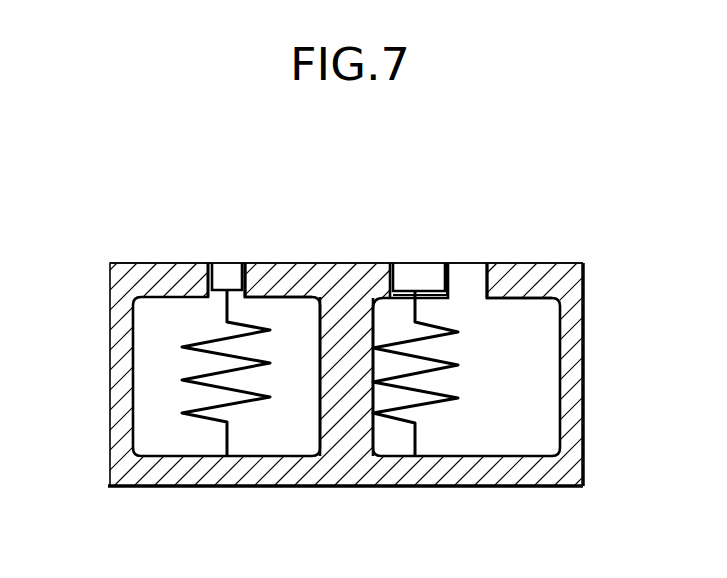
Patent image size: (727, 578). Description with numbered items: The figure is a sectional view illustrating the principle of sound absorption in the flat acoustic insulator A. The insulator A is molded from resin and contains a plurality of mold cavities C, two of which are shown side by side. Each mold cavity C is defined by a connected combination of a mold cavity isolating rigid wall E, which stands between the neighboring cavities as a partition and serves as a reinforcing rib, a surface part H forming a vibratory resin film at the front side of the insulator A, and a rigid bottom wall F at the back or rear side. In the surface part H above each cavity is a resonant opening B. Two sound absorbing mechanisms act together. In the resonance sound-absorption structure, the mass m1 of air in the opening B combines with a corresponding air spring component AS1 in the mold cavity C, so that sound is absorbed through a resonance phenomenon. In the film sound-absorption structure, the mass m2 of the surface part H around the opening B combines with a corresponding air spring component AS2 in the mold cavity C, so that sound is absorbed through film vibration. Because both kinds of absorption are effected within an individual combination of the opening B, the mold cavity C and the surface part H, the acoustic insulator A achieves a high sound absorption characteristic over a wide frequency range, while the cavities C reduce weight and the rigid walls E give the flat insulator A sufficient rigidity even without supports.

The acoustic insulator A is at (363, 379).
The surface part H is at (165, 275).
The opening B is at (250, 282).
The mold cavity C is at (284, 448).
The rigid wall E is at (322, 383).
The rigid bottom wall F is at (453, 479).
The mass of air m1 is at (226, 272).
The mass of the surface part m2 is at (420, 274).
The air spring component AS1 is at (200, 373).
The air spring component AS2 is at (455, 362).